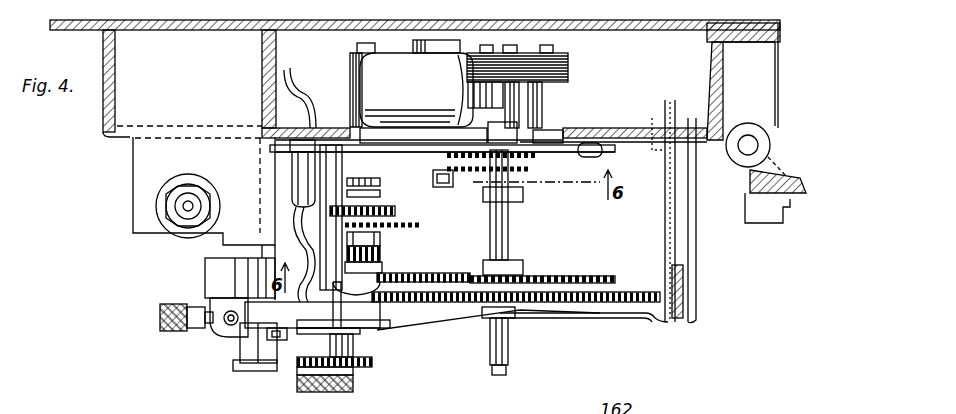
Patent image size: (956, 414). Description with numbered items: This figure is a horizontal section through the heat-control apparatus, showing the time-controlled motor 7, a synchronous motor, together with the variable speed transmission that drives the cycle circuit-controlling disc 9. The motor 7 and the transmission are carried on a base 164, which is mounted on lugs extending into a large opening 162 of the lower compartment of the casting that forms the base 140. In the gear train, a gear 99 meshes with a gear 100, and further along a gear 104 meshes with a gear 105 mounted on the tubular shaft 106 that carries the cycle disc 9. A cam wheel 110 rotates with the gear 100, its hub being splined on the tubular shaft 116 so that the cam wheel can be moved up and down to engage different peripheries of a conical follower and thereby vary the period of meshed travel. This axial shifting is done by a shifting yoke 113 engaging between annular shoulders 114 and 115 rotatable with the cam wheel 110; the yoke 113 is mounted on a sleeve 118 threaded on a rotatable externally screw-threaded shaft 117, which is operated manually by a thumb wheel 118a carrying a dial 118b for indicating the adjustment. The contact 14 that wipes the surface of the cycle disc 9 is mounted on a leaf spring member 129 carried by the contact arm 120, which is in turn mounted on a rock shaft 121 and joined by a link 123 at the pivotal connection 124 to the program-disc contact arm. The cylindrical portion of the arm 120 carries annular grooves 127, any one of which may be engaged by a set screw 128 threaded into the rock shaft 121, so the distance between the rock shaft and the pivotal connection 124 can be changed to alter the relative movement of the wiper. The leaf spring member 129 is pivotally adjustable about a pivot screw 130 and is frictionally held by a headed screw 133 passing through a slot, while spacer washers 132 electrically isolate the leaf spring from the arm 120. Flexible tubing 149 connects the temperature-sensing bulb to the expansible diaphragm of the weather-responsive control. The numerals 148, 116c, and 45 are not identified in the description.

The base 140 is at (103, 134).
The housing body 148 is at (133, 191).
The flexible tubing 149 is at (165, 213).
The link 123 is at (250, 290).
The annular grooves 127 is at (212, 305).
The rock shaft 121 is at (222, 335).
The set screw 128 is at (228, 336).
The lower block 116c is at (265, 365).
The pivotal connection 124 is at (278, 341).
The contact arm 120 is at (299, 330).
The externally screw-threaded shaft 117 is at (345, 315).
The pivot screw 130 is at (355, 348).
The dial 118b is at (375, 362).
The spacer washers 132 is at (355, 372).
The headed screw 133 is at (340, 390).
The thumb wheel 118a is at (355, 392).
The leaf spring member 129 is at (447, 326).
The gear 100 is at (407, 159).
The annular shoulder 115 is at (404, 187).
The annular shoulder 114 is at (382, 194).
The shifting yoke 113 is at (397, 211).
The cam wheel 110 is at (412, 290).
The tubular shaft 116 is at (382, 240).
The sleeve 118 is at (402, 258).
The gear 104 is at (393, 278).
The gear 105 is at (596, 270).
The rack 45 is at (636, 292).
The cycle circuit-controlling disc 9 is at (617, 320).
The contact 14 is at (522, 322).
The tubular shaft 106 is at (512, 226).
The gear 99 is at (448, 185).
The large opening 162 is at (560, 126).
The base 164 is at (603, 152).
The time-controlled motor 7 is at (566, 62).